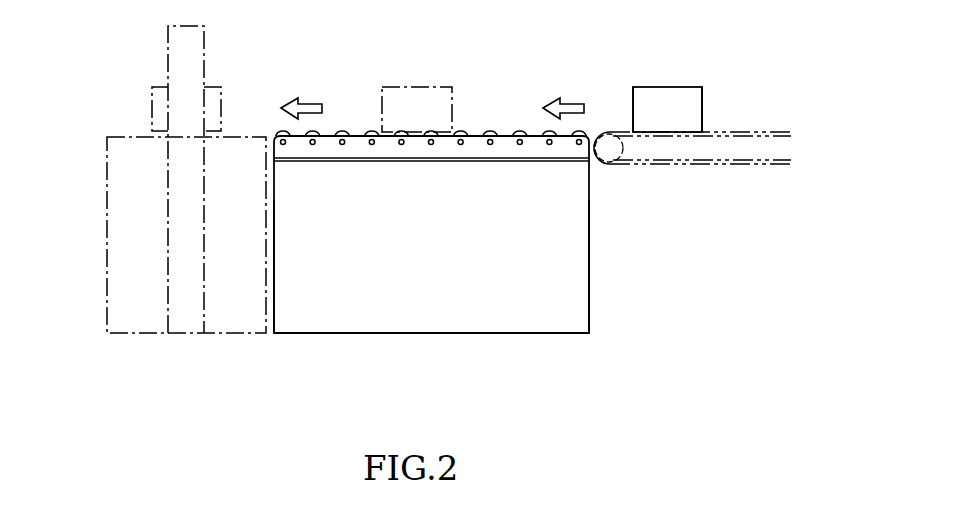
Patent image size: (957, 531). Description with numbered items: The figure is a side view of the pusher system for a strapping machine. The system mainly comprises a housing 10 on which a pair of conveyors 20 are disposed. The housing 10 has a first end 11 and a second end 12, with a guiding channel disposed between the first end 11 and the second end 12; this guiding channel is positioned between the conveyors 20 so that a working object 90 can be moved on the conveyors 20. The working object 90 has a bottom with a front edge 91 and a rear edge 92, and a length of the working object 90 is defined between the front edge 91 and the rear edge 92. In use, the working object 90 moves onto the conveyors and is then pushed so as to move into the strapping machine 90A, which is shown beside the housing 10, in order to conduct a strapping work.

The housing 10 is at (410, 325).
The first end 11 is at (590, 283).
The second end 12 is at (273, 264).
The conveyors 20 is at (520, 131).
The working object 90 is at (668, 88).
The front edge 91 is at (633, 107).
The rear edge 92 is at (702, 107).
The strapping machine 90A is at (107, 290).